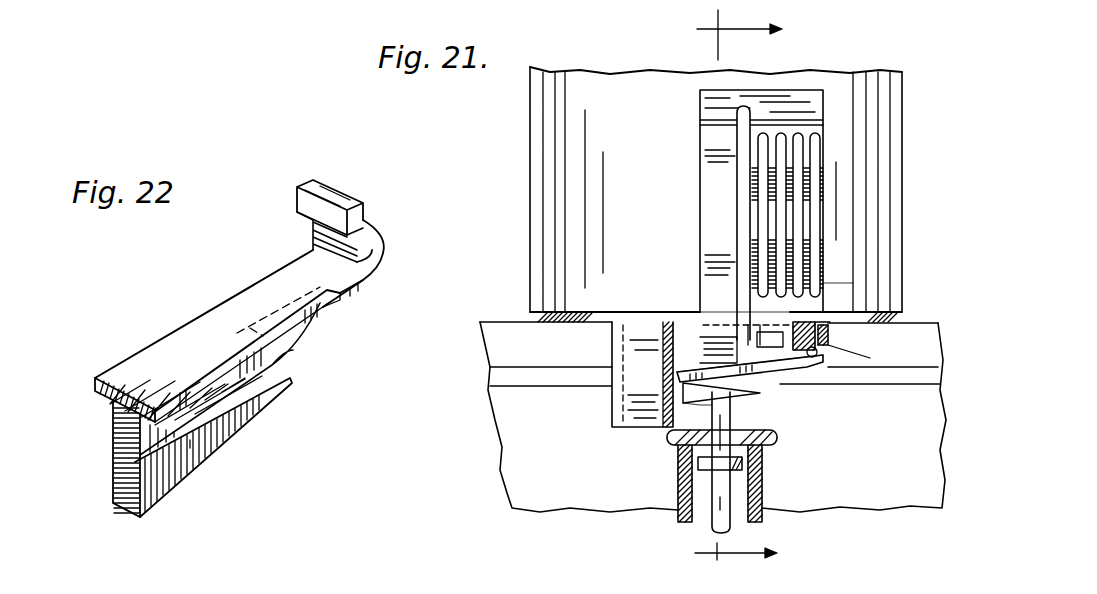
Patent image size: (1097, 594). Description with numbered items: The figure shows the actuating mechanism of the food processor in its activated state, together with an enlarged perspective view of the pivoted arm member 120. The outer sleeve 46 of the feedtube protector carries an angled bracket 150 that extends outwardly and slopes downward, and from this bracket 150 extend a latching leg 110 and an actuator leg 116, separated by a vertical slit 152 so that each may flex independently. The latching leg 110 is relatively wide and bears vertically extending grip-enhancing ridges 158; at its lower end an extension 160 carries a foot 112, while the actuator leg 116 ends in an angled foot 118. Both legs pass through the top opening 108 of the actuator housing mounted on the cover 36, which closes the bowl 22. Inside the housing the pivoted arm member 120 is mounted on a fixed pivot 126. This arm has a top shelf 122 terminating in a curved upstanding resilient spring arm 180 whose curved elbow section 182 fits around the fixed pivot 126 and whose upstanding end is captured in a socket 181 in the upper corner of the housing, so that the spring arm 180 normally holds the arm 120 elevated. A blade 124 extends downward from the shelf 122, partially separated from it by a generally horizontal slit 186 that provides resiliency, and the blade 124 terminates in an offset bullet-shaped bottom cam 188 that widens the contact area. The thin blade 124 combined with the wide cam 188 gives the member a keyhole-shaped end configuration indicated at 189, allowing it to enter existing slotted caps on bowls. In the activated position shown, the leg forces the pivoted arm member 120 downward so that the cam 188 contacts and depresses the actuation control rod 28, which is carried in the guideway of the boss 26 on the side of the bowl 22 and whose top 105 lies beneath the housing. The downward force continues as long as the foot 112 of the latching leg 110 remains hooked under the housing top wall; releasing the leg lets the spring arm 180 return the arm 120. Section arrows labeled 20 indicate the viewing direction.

In FIG. 21, the section line 20 is at (756, 287).
In FIG. 21, the bowl 22 is at (507, 452).
In FIG. 21, the boss 26 is at (763, 485).
In FIG. 21, the actuation control rod 28 is at (700, 532).
In FIG. 21, the cover 36 is at (502, 322).
In FIG. 21, the outer sleeve 46 is at (532, 128).
In FIG. 21, the top of the control rod 105 is at (745, 405).
In FIG. 21, the top opening 108 is at (707, 318).
In FIG. 21, the latching leg 110 is at (787, 172).
In FIG. 21, the foot 112 is at (777, 322).
In FIG. 21, the actuator leg 116 is at (712, 222).
In FIG. 21, the angled foot 118 is at (720, 327).
In FIG. 22, the pivoted arm member 120 is at (150, 336).
In FIG. 21, the pivoted arm member 120 is at (683, 364).
In FIG. 22, the top shelf 122 is at (268, 280).
In FIG. 21, the top shelf 122 is at (668, 342).
In FIG. 22, the blade 124 is at (110, 430).
In FIG. 21, the blade 124 is at (657, 385).
In FIG. 21, the fixed pivot 126 is at (817, 362).
In FIG. 21, the angled bracket 150 is at (707, 103).
In FIG. 21, the vertical slit 152 is at (738, 172).
In FIG. 21, the grip-enhancing ridges 158 is at (810, 227).
In FIG. 21, the extension 160 is at (827, 313).
In FIG. 22, the spring arm 180 is at (370, 216).
In FIG. 21, the socket 181 is at (825, 320).
In FIG. 22, the curved elbow section 182 is at (380, 265).
In FIG. 21, the curved elbow section 182 is at (832, 355).
In FIG. 22, the horizontal slit 186 is at (296, 344).
In FIG. 21, the horizontal slit 186 is at (783, 372).
In FIG. 22, the bottom cam 188 is at (223, 440).
In FIG. 21, the bottom cam 188 is at (673, 443).
In FIG. 22, the keyhole-shaped configuration 189 is at (108, 471).